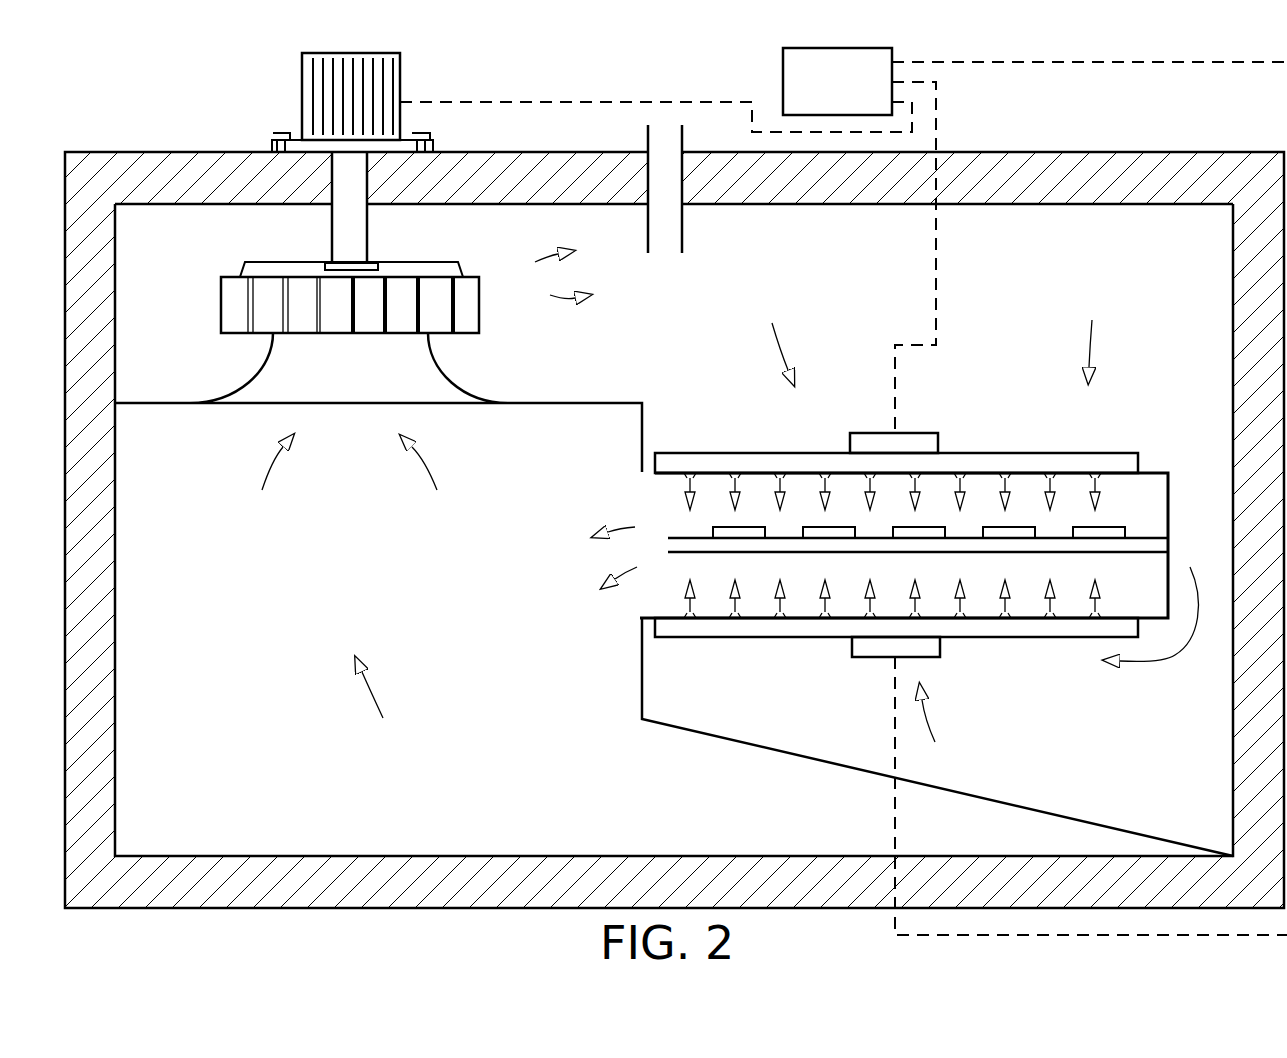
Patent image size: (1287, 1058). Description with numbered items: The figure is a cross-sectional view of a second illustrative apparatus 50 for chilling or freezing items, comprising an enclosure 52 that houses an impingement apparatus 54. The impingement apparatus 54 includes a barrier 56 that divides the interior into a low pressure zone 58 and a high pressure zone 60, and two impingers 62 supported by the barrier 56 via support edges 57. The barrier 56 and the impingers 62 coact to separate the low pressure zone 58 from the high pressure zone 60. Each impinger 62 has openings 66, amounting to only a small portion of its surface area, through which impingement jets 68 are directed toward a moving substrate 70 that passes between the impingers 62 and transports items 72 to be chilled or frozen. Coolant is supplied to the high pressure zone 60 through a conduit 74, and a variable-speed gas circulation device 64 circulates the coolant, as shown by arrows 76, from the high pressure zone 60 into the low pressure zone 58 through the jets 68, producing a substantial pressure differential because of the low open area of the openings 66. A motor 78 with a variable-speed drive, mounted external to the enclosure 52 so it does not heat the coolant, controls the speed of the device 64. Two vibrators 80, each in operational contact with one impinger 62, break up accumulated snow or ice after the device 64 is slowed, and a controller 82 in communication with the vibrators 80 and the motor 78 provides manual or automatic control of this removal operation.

The apparatus 50 is at (971, 110).
The enclosure 52 is at (1159, 126).
The impingement apparatus 54 is at (928, 533).
The barrier 56 is at (508, 403).
The support edges 57 is at (640, 473).
The low pressure zone 58 is at (193, 757).
The high pressure zone 60 is at (1033, 304).
The impingers 62 is at (712, 453).
The variable-speed gas circulation device 64 is at (236, 278).
The openings 66 is at (690, 473).
The impingement jets 68 is at (787, 500).
The substrate 70 is at (1137, 547).
The items 72 is at (820, 527).
The conduit 74 is at (634, 131).
The arrows 76 is at (787, 348).
The motor 78 is at (402, 63).
The vibrators 80 is at (912, 440).
The controller 82 is at (826, 93).